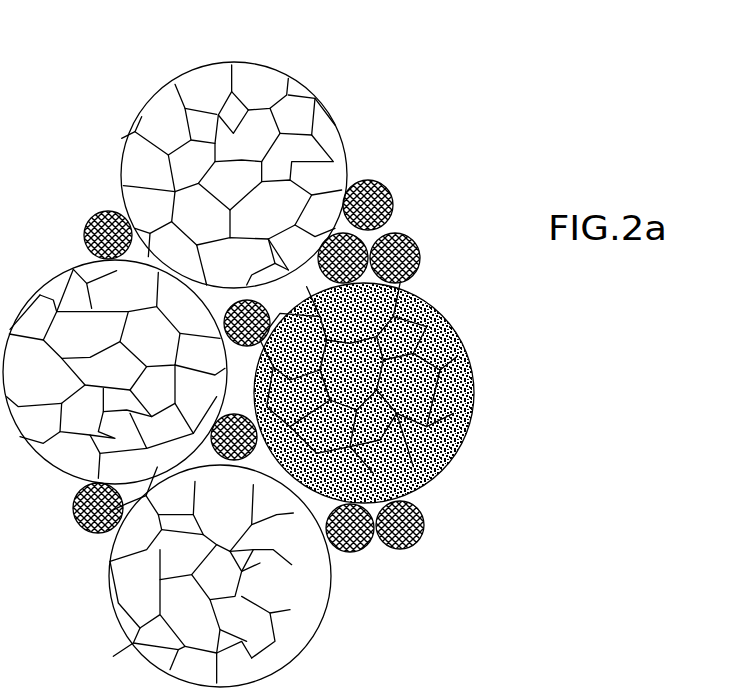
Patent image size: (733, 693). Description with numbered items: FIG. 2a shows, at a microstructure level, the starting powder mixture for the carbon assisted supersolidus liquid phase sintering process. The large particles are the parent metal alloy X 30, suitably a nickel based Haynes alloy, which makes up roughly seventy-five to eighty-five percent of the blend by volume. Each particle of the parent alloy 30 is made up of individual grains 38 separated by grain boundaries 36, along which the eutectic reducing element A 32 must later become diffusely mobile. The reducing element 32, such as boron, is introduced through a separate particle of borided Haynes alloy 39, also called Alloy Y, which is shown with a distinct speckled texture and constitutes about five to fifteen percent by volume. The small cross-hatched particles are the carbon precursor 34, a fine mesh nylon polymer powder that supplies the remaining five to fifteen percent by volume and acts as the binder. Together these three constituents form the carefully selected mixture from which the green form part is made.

The parent metal alloy X 30 is at (138, 110).
The eutectic reducing element A 32 is at (443, 478).
The carbon precursor 34 is at (97, 222).
The grain boundaries 36 is at (248, 65).
The grains 38 is at (297, 115).
The Borided Haynes-230 (Alloy Y) 39 is at (490, 352).